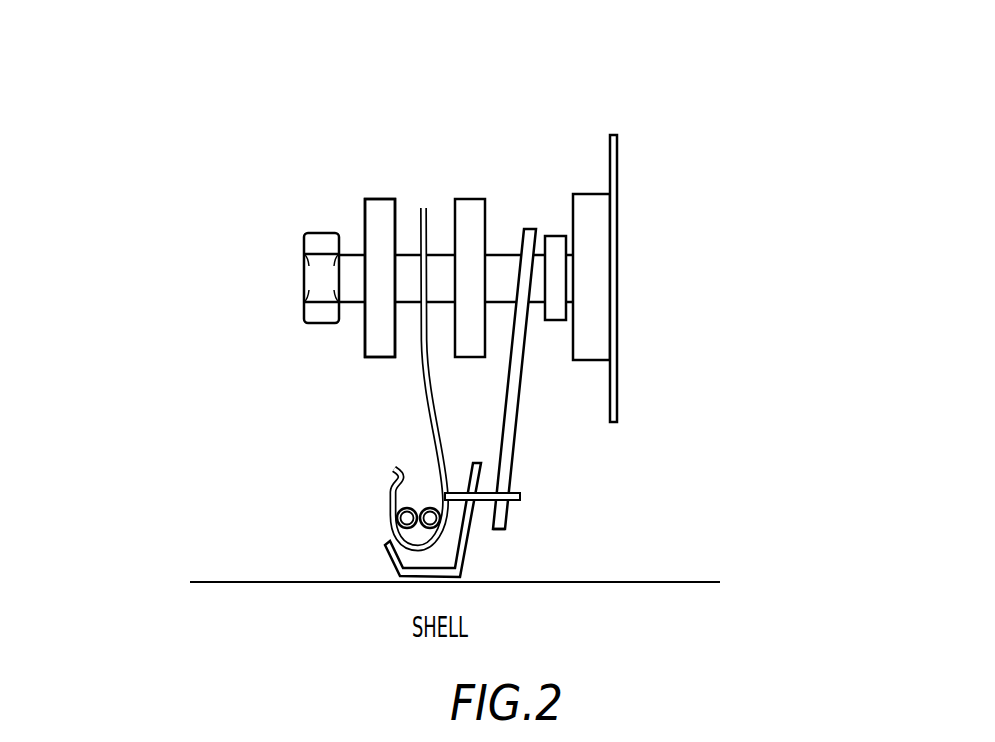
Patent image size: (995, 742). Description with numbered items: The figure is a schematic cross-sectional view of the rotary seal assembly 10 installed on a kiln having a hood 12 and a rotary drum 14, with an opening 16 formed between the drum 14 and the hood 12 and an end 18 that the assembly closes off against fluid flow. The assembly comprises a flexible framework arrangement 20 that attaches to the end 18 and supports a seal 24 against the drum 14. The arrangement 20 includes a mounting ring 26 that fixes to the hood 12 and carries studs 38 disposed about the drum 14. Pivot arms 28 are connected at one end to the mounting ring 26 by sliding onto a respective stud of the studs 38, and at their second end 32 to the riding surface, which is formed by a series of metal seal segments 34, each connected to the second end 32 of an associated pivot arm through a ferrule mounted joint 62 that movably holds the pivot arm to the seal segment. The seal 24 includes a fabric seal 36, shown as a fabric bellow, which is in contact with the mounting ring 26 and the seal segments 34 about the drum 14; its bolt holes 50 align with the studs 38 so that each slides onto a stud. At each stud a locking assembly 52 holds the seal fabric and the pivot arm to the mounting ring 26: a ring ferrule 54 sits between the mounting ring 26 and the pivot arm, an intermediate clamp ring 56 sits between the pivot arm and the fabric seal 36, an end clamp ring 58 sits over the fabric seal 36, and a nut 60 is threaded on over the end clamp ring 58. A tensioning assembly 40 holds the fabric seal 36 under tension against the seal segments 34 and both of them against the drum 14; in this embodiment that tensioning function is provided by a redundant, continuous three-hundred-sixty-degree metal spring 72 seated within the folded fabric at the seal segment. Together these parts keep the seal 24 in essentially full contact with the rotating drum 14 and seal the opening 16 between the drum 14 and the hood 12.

The rotary seal assembly 10 is at (777, 183).
The hood 12 is at (677, 297).
The rotary drum 14 is at (592, 640).
The opening 16 is at (582, 463).
The end 18 is at (442, 108).
The flexible framework arrangement 20 is at (285, 170).
The seal 24 is at (338, 373).
The mounting ring 26 is at (585, 178).
The pivot arms 28 is at (525, 387).
The second end 32 is at (506, 525).
The seal segments 34 is at (385, 558).
The fabric seal 36 is at (400, 400).
The studs 38 is at (497, 302).
The tensioning assembly 40 is at (353, 428).
The bolt holes 50 is at (403, 200).
The locking assembly 52 is at (167, 273).
The ring ferrule 54 is at (557, 214).
The intermediate clamp ring 56 is at (450, 182).
The end clamp ring 58 is at (357, 213).
The nut 60 is at (293, 281).
The ferrule mounted joint 62 is at (525, 498).
The metal spring 72 is at (423, 485).